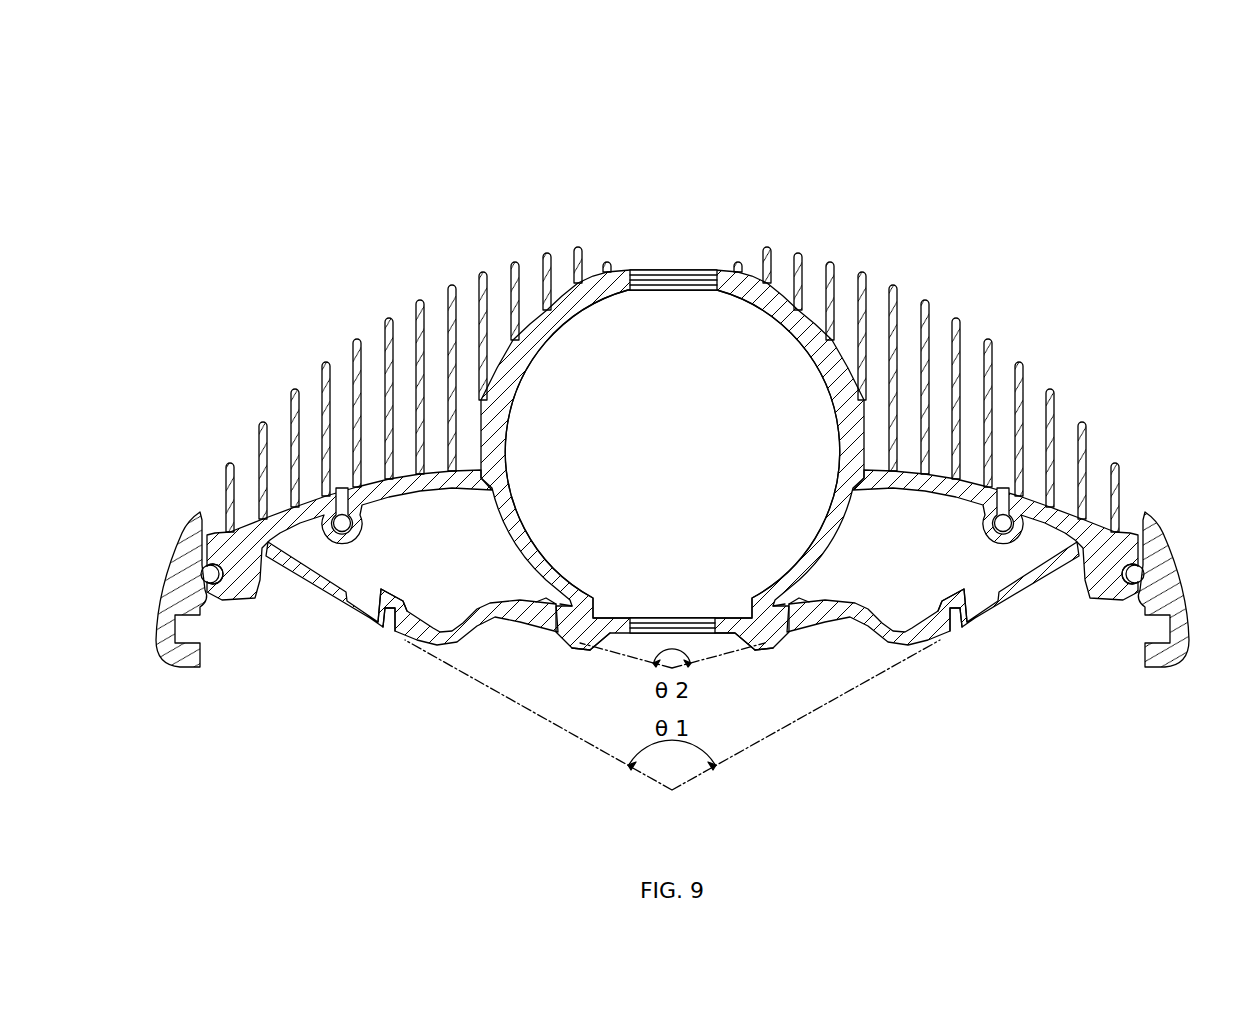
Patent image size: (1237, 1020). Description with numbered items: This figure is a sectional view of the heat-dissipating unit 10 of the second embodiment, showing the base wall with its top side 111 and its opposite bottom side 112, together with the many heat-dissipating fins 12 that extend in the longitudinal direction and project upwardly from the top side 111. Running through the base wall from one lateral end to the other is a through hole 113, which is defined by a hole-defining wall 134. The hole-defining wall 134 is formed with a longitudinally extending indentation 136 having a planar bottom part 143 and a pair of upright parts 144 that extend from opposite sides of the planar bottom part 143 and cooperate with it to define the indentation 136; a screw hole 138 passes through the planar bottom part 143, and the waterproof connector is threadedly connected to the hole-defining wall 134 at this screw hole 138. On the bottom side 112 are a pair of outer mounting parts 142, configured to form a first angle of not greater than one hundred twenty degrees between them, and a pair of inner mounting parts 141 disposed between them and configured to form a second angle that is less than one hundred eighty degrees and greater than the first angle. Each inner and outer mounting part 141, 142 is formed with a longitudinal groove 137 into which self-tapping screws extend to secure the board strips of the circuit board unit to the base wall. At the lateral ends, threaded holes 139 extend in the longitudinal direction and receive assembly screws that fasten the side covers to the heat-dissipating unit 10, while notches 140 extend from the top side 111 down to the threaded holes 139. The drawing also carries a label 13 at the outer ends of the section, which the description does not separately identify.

The heat-dissipating unit 10 is at (862, 241).
The heat-dissipating fins 12 is at (893, 282).
The end caps 13 is at (170, 590).
The top side 111 is at (250, 520).
The bottom side 112 is at (277, 553).
The through hole 113 is at (602, 350).
The hole-defining wall 134 is at (743, 302).
The indentation 136 is at (733, 612).
The groove 137 is at (382, 600).
The screw hole 138 is at (683, 617).
The threaded holes 139 is at (342, 526).
The notches 140 is at (342, 510).
The inner mounting part 141 is at (543, 624).
The outer mounting parts 142 is at (390, 630).
The planar bottom part 143 is at (606, 646).
The upright parts 144 is at (594, 650).